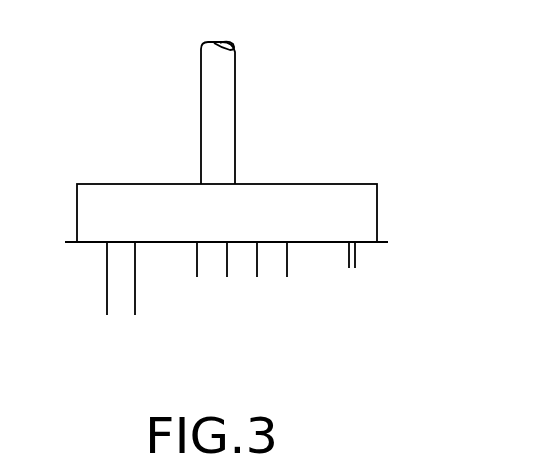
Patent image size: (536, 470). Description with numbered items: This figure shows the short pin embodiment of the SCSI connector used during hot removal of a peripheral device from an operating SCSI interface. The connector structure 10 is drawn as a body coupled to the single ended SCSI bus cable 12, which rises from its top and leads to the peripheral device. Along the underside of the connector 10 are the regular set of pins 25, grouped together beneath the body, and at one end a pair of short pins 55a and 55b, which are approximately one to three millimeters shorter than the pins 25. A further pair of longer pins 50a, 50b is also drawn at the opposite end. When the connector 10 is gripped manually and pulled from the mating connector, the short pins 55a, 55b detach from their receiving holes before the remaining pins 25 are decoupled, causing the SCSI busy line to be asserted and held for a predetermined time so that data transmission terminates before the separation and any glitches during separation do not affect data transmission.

The connector structure 10 is at (344, 196).
The single ended SCSI bus cable 12 is at (223, 92).
The pins 25 is at (302, 285).
The lead terminal 50a is at (105, 299).
The lead terminal 50b is at (136, 305).
The short pin 55a is at (349, 263).
The short pin 55b is at (356, 258).